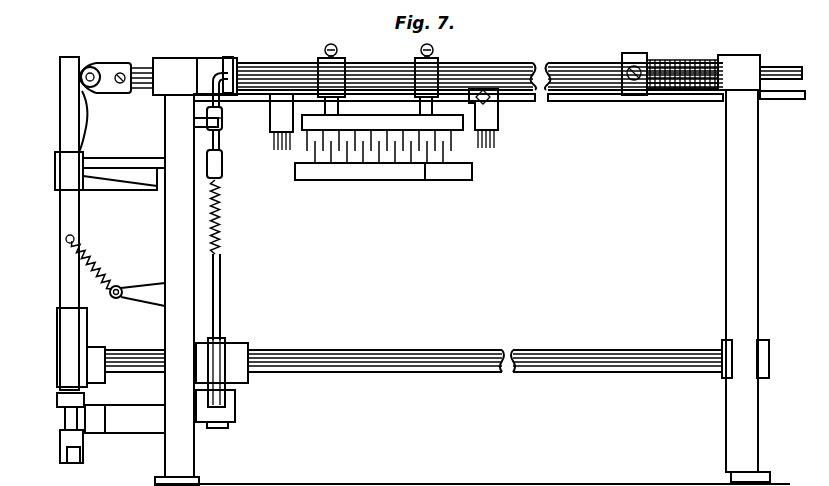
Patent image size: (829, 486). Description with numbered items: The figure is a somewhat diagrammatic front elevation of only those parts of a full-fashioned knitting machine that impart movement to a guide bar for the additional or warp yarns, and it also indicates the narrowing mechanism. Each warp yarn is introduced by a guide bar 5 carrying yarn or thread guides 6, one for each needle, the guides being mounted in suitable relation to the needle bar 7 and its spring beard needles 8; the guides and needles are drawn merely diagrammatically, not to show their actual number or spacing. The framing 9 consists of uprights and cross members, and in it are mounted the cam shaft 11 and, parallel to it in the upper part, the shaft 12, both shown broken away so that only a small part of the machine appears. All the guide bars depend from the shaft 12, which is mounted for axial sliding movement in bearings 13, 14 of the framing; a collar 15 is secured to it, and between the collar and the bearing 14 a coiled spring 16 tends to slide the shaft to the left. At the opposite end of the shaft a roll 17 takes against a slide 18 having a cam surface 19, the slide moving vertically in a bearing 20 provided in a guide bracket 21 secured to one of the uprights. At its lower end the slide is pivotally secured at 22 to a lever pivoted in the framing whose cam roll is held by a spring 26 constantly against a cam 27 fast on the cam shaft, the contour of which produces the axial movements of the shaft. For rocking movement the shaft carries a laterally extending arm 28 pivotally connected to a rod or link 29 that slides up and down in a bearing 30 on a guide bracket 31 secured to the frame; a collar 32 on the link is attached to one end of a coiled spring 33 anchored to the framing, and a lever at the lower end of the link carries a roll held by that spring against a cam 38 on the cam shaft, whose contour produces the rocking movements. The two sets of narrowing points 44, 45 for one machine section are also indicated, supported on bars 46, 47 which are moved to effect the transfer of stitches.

The guide bar 5 is at (372, 118).
The yarn or thread guides 6 is at (422, 180).
The needle bar 7 is at (400, 173).
The needles 8 is at (366, 166).
The framing 9 is at (170, 224).
The cam shaft 11 is at (414, 362).
The shaft 12 is at (291, 75).
The bearing 13 is at (170, 62).
The bearing 14 is at (733, 62).
The collar 15 is at (631, 60).
The coiled spring 16 is at (673, 64).
The roll 17 is at (87, 66).
The slide 18 is at (60, 84).
The cam surface 19 is at (80, 96).
The bearing 20 is at (55, 169).
The guide bracket 21 is at (121, 165).
The pivot 22 is at (66, 444).
The spring 26 is at (109, 283).
The cam 27 is at (57, 338).
The arm 28 is at (229, 58).
The rod or link 29 is at (221, 268).
The bearing 30 is at (222, 122).
The guide bracket 31 is at (210, 117).
The collar 32 is at (221, 168).
The coiled spring 33 is at (222, 222).
The cam 38 is at (224, 362).
The narrowing points 44 is at (271, 138).
The narrowing points 45 is at (504, 138).
The bar 46 is at (780, 99).
The bar 47 is at (778, 67).